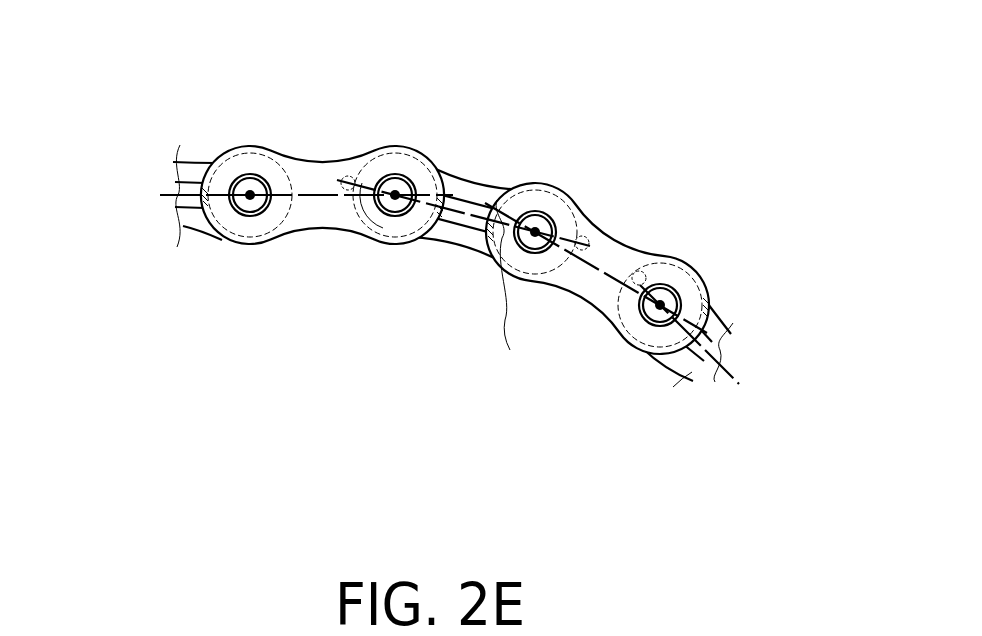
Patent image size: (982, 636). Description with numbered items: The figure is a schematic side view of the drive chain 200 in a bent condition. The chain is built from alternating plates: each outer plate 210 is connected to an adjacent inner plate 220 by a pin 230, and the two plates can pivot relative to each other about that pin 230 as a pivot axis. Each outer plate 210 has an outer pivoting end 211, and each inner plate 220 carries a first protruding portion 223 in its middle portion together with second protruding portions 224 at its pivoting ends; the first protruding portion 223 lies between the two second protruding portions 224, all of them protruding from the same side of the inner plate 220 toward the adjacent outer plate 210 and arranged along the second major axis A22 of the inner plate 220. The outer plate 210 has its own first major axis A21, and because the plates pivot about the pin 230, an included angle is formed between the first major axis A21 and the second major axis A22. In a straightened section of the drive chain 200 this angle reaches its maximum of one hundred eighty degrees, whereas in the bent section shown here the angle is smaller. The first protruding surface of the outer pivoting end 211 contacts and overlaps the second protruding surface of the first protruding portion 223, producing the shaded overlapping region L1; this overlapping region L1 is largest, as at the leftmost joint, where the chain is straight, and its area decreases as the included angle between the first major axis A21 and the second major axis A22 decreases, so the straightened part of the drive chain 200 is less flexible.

The drive chain 200 is at (102, 59).
The outer plate 210 is at (310, 173).
The outer pivoting end 211 is at (443, 185).
The inner plate 220 is at (470, 200).
The first protruding portion 223 is at (440, 217).
The second protruding portion 224 is at (350, 177).
The pin 230 is at (250, 175).
The first major axis A21 is at (313, 197).
The second major axis A22 is at (572, 237).
The overlapping region L1 is at (213, 230).